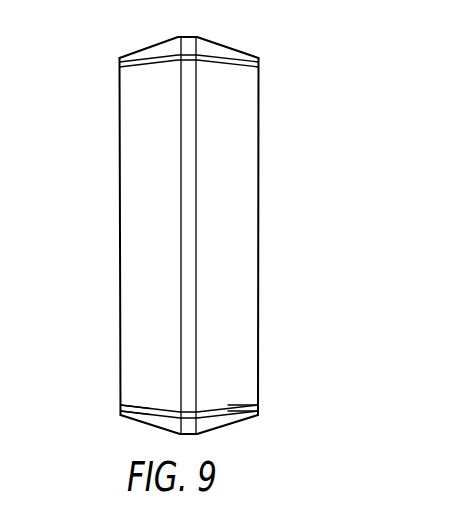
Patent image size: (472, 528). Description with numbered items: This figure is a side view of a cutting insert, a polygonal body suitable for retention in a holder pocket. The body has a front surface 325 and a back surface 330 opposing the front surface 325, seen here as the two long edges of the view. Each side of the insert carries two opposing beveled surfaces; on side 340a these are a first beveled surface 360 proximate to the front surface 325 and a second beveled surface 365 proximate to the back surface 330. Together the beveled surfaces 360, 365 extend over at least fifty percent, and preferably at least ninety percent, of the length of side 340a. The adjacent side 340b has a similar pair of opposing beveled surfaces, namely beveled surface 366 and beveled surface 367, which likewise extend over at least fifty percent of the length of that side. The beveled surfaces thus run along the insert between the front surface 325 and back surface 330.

The front surface 325 is at (120, 163).
The back surface 330 is at (259, 220).
The side 340a is at (248, 128).
The side 340b is at (222, 435).
The first beveled surface 360 is at (140, 248).
The second beveled surface 365 is at (233, 277).
The beveled surface 366 is at (130, 418).
The beveled surface 367 is at (238, 430).